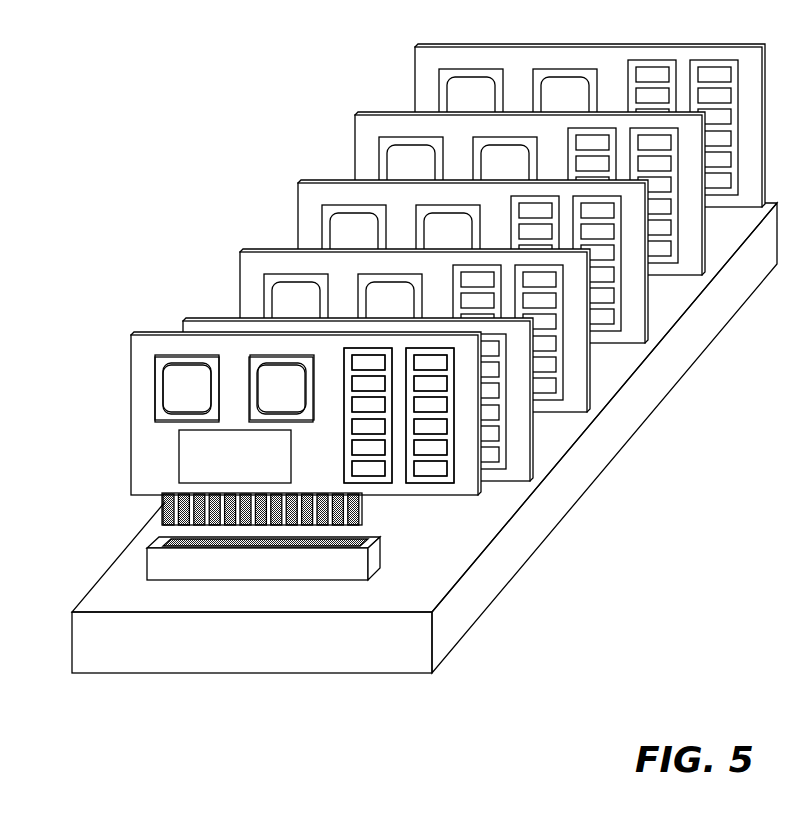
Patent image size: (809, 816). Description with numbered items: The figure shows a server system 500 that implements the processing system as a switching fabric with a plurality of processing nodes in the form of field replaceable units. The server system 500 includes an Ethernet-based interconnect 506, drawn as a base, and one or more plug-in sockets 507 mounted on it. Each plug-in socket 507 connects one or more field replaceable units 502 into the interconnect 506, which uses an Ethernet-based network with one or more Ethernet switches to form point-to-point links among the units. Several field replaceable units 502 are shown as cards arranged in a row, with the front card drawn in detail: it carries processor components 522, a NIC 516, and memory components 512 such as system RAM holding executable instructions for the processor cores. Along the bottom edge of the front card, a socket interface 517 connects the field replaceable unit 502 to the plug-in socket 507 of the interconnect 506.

The server system 500 is at (148, 181).
The field replaceable unit 502 is at (432, 46).
The Ethernet-based interconnect 506 is at (70, 628).
The plug-in socket 507 is at (146, 580).
The memory component 512 is at (344, 457).
The NIC 516 is at (245, 473).
The socket interface 517 is at (365, 510).
The processors 522 is at (202, 396).